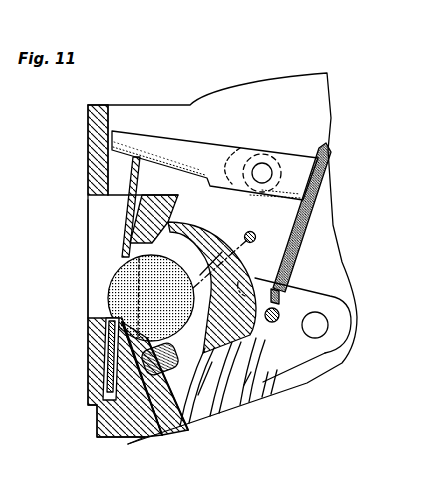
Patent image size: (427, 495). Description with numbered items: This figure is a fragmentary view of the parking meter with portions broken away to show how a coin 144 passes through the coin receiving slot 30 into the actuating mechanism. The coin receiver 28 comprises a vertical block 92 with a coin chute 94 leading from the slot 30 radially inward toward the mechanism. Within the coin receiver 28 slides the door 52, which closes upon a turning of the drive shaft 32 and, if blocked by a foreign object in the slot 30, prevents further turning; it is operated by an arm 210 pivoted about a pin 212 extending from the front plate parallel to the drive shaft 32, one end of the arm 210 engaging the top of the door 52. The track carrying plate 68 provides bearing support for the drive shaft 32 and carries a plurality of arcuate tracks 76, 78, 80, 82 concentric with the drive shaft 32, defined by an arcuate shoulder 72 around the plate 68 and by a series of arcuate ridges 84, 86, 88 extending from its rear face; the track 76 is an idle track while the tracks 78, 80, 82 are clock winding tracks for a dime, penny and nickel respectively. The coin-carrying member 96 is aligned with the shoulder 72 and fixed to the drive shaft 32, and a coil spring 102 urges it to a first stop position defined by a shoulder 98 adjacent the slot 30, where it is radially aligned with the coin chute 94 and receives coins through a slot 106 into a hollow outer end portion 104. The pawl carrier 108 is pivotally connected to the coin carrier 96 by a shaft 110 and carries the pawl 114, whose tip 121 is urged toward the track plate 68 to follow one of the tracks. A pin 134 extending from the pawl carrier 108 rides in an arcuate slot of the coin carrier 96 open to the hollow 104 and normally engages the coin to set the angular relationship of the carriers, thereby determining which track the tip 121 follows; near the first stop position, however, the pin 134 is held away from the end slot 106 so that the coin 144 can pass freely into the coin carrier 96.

The coin receiver 28 is at (82, 145).
The coin receiving slot 30 is at (88, 274).
The drive shaft 32 is at (327, 313).
The door 52 is at (129, 217).
The track carrying plate 68 is at (218, 208).
The arcuate shoulder 72 is at (143, 432).
The idle track 76 is at (158, 430).
The clock winding track 78 is at (195, 410).
The clock winding track 80 is at (222, 403).
The clock winding track 82 is at (260, 392).
The arcuate ridge 84 is at (213, 363).
The arcuate ridge 86 is at (248, 370).
The arcuate ridge 88 is at (283, 386).
The vertical block 92 is at (88, 365).
The coin chute 94 is at (98, 317).
The coin-carrying member 96 is at (231, 231).
The shoulder 98 is at (176, 225).
The coil spring 102 is at (318, 210).
The hollow outer end portion 104 is at (160, 240).
The slot 106 is at (130, 256).
The pawl carrier 108 is at (208, 262).
The shaft 110 is at (97, 413).
The pawl 114 is at (246, 250).
The tip 121 is at (254, 232).
The pin 134 is at (269, 317).
The coin 144 is at (137, 295).
The arm 210 is at (222, 150).
The pin 212 is at (265, 162).